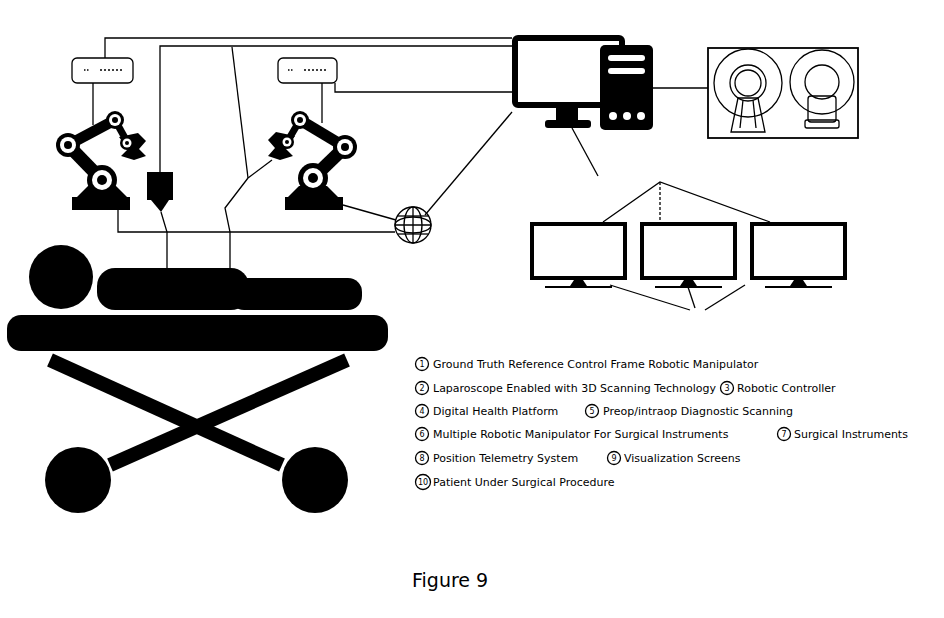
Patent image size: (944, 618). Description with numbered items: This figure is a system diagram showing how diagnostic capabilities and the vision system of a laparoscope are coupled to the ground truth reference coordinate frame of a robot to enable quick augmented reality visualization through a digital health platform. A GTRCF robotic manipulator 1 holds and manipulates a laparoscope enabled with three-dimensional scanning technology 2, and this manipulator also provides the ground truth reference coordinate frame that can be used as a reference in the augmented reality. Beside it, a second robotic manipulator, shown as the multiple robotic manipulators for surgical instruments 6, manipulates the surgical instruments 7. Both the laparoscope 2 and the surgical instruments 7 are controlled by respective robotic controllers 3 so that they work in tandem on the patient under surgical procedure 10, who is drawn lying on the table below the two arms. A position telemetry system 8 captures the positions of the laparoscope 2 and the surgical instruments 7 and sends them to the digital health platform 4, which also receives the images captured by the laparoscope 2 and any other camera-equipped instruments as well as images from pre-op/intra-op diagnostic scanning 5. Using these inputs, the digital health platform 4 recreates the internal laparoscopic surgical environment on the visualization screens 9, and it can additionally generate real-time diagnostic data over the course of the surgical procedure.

The GTRCF robotic manipulator 1 is at (78, 170).
The laparoscope enabled with 3D scanning technology 2 is at (173, 173).
The robotic controllers 3 is at (72, 70).
The digital health platform 4 is at (636, 45).
The pre-op/intra-op diagnostic scanning 5 is at (775, 48).
The multiple robotic manipulators for surgical instruments 6 is at (283, 134).
The surgical instrument(s) 7 is at (247, 178).
The position telemetry system 8 is at (431, 231).
The visualization screens 9 is at (688, 274).
The patient under surgical procedure 10 is at (52, 248).